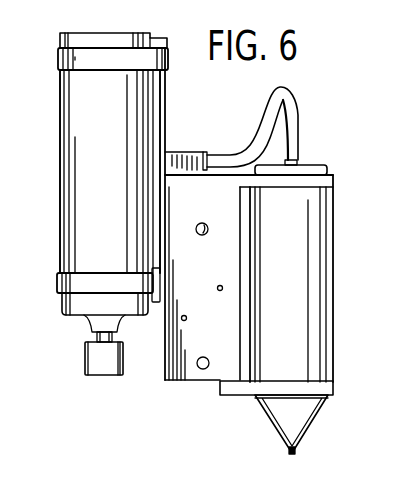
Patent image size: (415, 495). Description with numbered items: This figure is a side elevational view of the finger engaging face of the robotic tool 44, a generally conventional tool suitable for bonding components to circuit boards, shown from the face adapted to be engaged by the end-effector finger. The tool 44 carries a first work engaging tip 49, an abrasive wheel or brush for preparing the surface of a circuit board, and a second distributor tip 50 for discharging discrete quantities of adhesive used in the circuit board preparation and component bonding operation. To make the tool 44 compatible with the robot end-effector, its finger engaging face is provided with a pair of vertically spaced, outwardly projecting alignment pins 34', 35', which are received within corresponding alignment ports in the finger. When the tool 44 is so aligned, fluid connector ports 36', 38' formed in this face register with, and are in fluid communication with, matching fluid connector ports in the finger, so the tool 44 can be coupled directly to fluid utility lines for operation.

The robotic tool 44 is at (212, 248).
The alignment pin 34' is at (150, 223).
The fluid connector port 36' is at (259, 273).
The fluid connector port 38' is at (241, 306).
The alignment pin 35' is at (179, 383).
The first work engaging tip 49 is at (92, 357).
The second distributor tip 50 is at (287, 452).